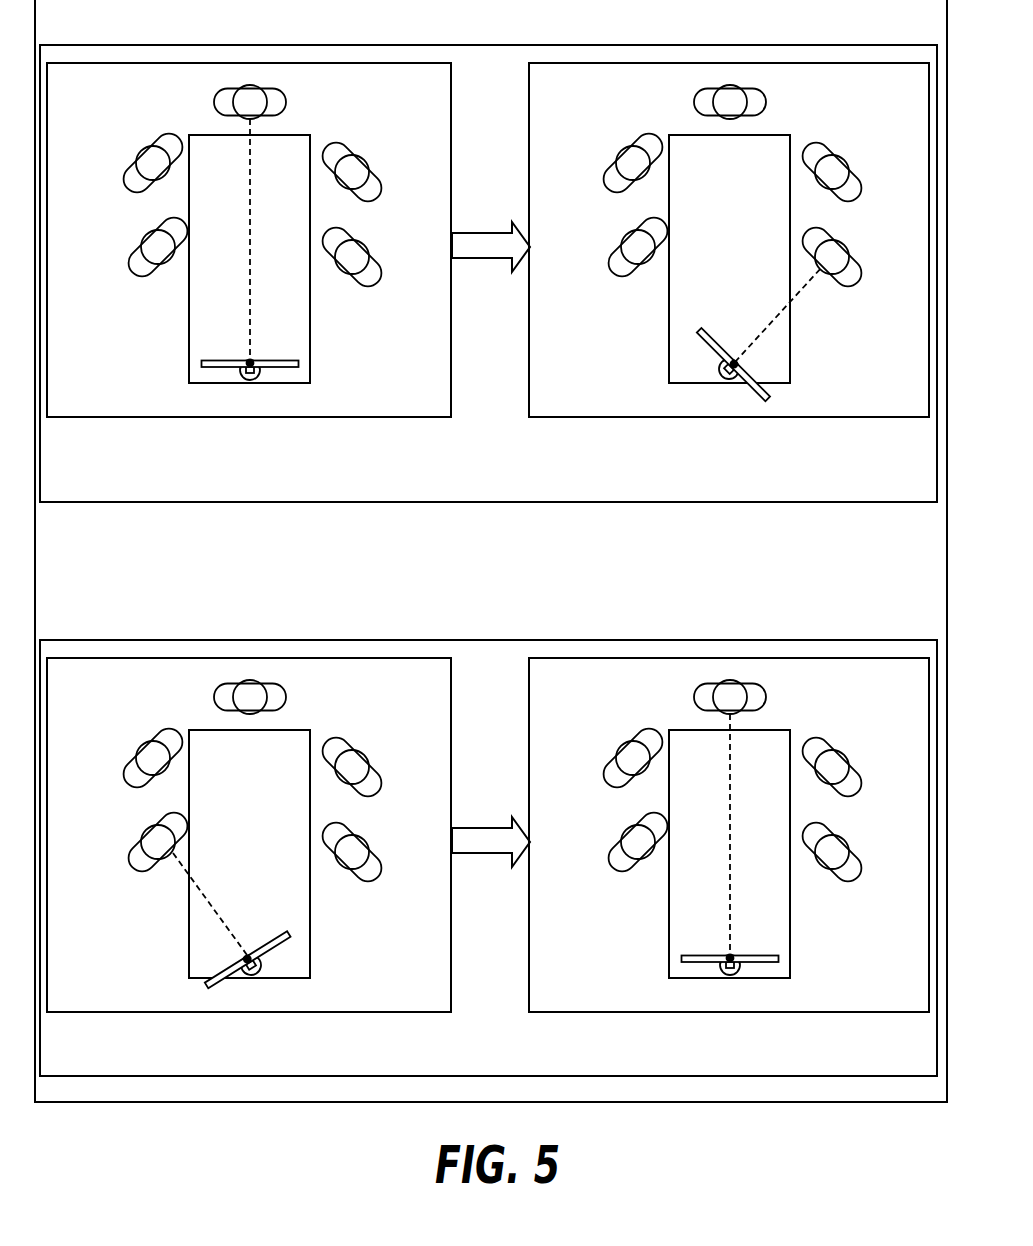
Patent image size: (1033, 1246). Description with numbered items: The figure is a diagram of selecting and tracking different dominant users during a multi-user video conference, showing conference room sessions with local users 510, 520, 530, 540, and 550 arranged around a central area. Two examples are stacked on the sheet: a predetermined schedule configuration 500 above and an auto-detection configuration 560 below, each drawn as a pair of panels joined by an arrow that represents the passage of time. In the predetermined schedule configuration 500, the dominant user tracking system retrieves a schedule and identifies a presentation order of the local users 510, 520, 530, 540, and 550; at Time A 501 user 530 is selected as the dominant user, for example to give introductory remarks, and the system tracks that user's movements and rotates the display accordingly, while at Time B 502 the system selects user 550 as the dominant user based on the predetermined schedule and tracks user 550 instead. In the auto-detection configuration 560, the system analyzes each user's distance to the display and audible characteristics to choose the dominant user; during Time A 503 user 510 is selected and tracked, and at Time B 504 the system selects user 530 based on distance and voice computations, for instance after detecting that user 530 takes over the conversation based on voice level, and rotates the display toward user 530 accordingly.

The predetermined schedule configuration 500 is at (488, 45).
The auto-detection configuration 560 is at (489, 640).
The Time A 501 is at (248, 418).
The Time B 502 is at (729, 416).
The Time A 503 is at (247, 1013).
The Time B 504 is at (729, 1013).
The local user 510 is at (132, 279).
The local user 520 is at (127, 195).
The local user 530 is at (215, 103).
The local user 540 is at (378, 198).
The local user 550 is at (378, 284).